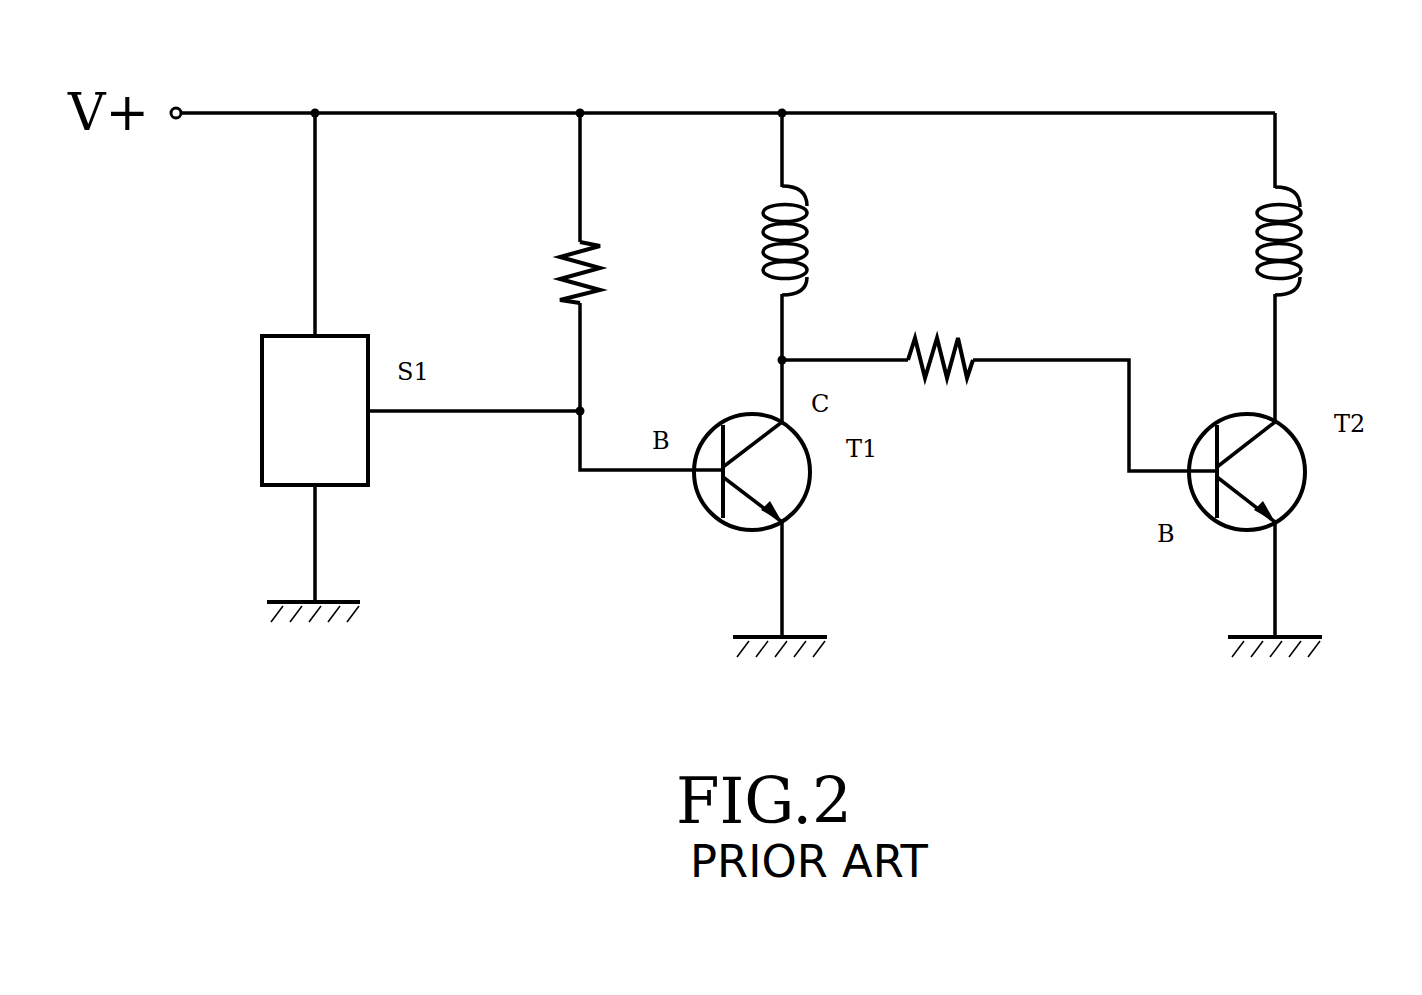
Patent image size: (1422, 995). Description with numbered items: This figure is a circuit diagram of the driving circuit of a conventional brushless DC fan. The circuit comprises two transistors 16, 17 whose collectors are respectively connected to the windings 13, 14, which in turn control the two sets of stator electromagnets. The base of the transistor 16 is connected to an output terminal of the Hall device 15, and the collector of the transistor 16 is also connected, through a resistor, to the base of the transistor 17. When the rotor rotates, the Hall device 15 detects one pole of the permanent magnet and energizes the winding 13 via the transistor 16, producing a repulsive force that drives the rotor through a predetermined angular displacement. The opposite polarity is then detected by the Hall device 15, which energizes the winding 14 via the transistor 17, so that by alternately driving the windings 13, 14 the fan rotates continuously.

The winding 13 is at (778, 230).
The winding 14 is at (1270, 231).
The Hall device 15 is at (272, 434).
The transistor 16 is at (782, 480).
The transistor 17 is at (1277, 483).